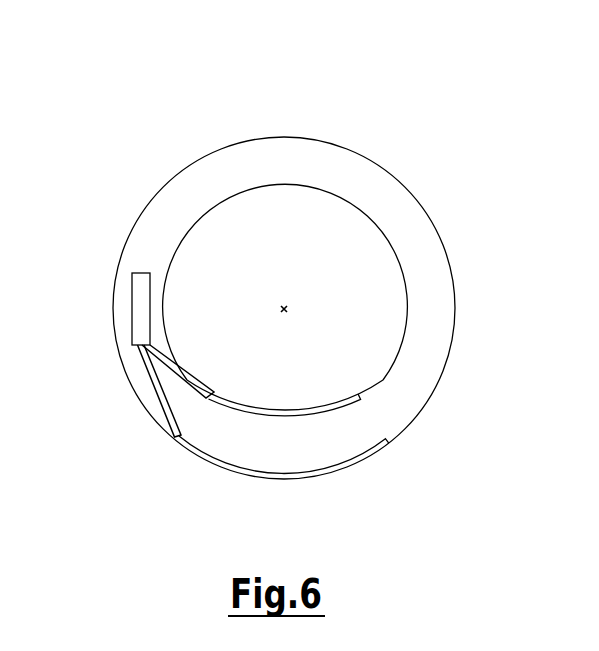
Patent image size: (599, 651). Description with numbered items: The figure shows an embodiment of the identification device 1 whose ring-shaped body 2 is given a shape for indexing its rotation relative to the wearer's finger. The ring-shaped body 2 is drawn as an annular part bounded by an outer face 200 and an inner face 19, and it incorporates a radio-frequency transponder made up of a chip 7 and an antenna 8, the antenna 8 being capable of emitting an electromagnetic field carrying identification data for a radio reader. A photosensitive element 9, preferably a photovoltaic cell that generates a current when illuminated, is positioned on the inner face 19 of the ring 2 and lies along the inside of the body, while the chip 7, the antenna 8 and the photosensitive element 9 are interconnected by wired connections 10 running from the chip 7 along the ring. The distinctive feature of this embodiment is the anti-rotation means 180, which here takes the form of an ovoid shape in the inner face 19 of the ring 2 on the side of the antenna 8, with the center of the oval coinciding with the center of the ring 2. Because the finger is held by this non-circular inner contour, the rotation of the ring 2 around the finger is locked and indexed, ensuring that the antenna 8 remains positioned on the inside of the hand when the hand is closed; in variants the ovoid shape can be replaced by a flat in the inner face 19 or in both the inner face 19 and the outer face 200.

The identification device 1 is at (138, 135).
The ring-shaped body 2 is at (380, 192).
The chip 7 is at (142, 284).
The antenna 8 is at (303, 476).
The photosensitive element 9 is at (320, 416).
The wired connections 10 is at (158, 353).
The inner face 19 is at (400, 257).
The anti-rotation means 180 is at (298, 370).
The outer face 200 is at (447, 365).